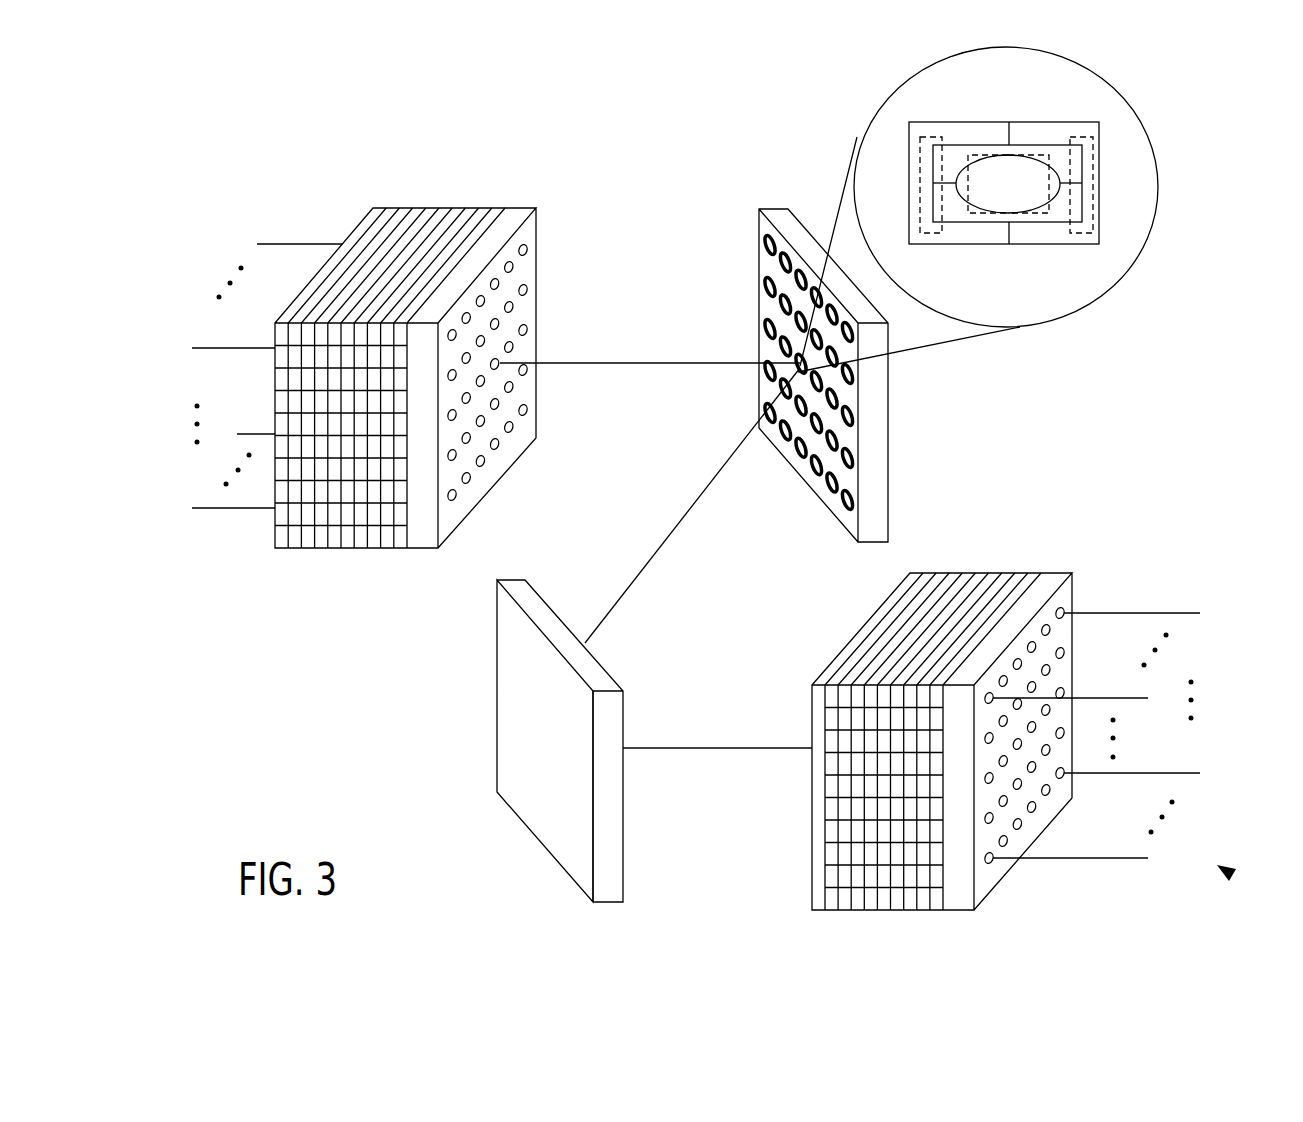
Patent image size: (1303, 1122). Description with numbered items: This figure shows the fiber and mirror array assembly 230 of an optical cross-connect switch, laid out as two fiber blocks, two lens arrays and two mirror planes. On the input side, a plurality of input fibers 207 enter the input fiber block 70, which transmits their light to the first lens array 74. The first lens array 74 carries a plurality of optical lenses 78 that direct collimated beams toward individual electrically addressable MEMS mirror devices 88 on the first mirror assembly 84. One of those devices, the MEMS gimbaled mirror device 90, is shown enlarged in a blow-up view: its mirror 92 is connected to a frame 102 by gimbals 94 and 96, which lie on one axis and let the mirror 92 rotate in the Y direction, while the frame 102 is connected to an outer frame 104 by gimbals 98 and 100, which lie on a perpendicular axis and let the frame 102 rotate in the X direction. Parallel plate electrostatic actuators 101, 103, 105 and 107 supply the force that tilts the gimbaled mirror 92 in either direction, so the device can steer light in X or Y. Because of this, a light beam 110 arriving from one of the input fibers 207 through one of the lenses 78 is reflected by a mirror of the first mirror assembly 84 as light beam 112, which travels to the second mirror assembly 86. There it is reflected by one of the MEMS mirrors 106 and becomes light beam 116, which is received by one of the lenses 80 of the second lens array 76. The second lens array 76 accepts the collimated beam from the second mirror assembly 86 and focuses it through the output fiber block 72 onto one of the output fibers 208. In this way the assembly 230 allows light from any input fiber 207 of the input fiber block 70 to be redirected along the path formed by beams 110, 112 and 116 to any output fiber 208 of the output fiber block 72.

The input fibers 207 is at (305, 244).
The input fiber block 70 is at (440, 208).
The first lens array 74 is at (528, 208).
The optical lenses 78 is at (530, 248).
The light beam 110 is at (655, 363).
The first mirror assembly 84 is at (770, 208).
The MEMS mirror devices 88 is at (765, 248).
The light beam 112 is at (682, 518).
The second mirror assembly 86 is at (533, 586).
The MEMS mirrors 106 is at (610, 671).
The light beam 116 is at (715, 748).
The output fiber block 72 is at (1010, 573).
The lenses 80 is at (885, 597).
The second lens array 76 is at (918, 573).
The output fibers 208 is at (1160, 613).
The fiber and mirror array assembly 230 is at (1231, 876).
The MEMS gimbaled mirror device 90 is at (1158, 160).
The outer frame 104 is at (1098, 158).
The frame 102 is at (1083, 200).
The gimbal 98 is at (1013, 135).
The gimbal 100 is at (1005, 236).
The gimbal 96 is at (950, 182).
The gimbal 94 is at (1068, 167).
The mirror 92 is at (1032, 222).
The parallel plate electrostatic actuator 101 is at (976, 196).
The parallel plate electrostatic actuator 103 is at (1012, 174).
The parallel plate electrostatic actuator 105 is at (925, 237).
The parallel plate electrostatic actuator 107 is at (1078, 237).